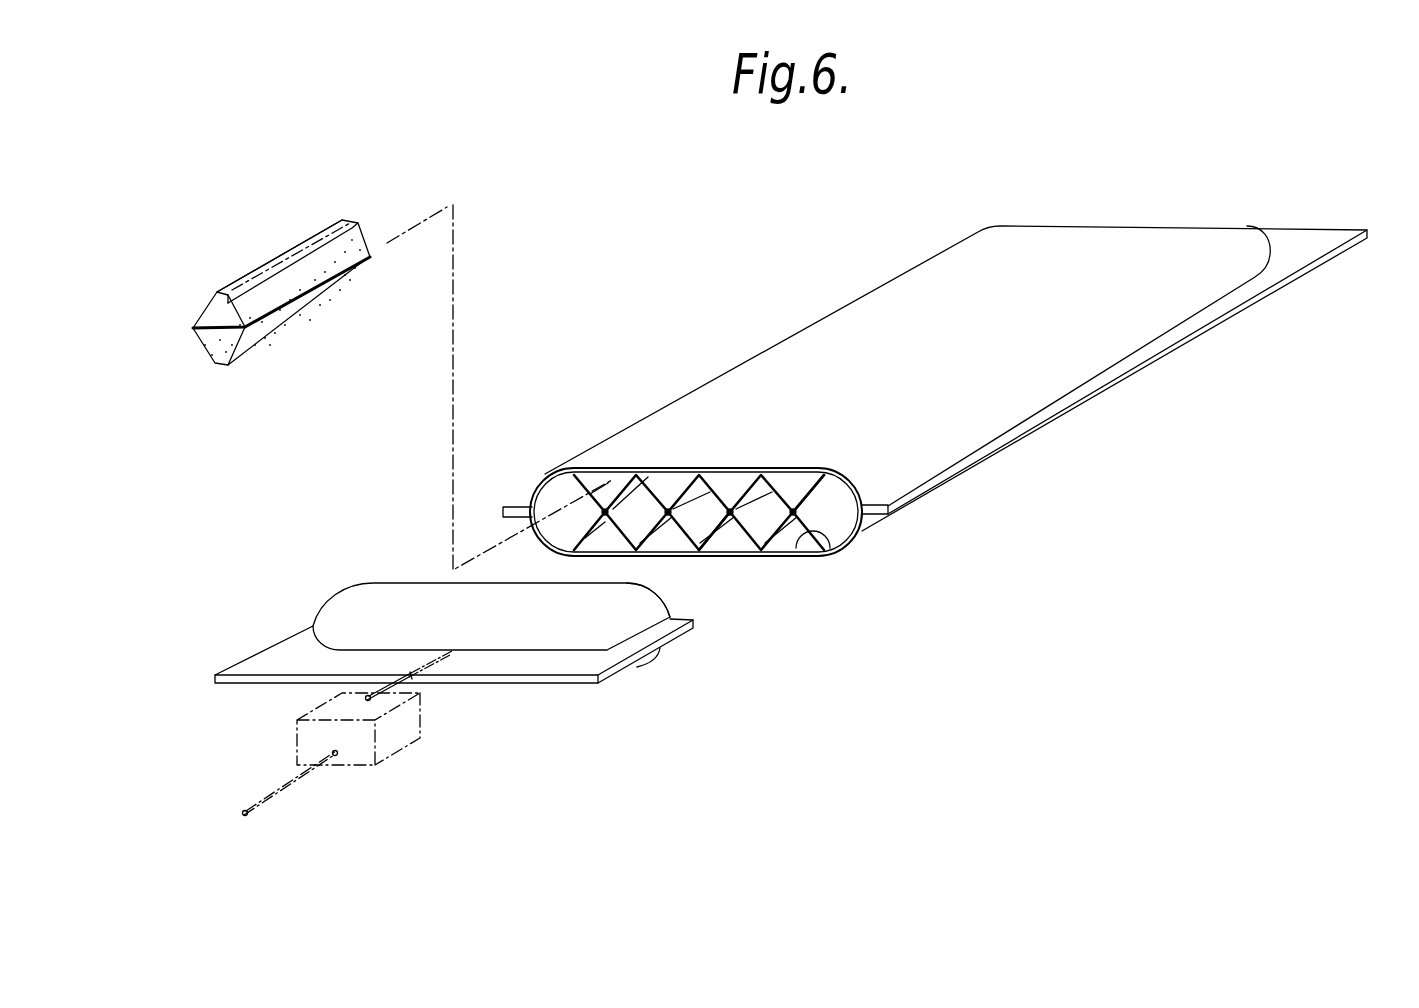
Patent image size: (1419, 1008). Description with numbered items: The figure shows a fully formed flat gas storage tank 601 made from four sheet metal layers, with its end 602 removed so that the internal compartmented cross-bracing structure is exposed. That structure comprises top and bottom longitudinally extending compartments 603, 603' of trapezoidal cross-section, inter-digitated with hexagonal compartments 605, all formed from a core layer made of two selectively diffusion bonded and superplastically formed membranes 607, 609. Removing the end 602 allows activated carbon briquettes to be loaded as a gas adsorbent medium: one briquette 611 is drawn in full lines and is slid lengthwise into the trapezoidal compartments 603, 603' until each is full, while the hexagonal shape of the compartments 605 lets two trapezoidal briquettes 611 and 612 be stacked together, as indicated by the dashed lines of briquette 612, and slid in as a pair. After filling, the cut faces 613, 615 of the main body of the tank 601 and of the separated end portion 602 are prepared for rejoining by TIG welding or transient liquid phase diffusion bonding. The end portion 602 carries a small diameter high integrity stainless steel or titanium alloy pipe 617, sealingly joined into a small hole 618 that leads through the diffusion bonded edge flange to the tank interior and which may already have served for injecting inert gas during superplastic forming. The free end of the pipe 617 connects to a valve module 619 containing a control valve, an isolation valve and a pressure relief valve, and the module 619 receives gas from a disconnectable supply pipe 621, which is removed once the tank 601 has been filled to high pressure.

The flat gas storage tank 601 is at (872, 260).
The end of the tank 602 is at (607, 692).
The top longitudinally extending compartment 603 is at (699, 456).
The bottom longitudinally extending compartment 603' is at (742, 568).
The hexagonal compartments 605 is at (640, 480).
The membrane 607 is at (830, 547).
The membrane 609 is at (815, 492).
The activated carbon briquette 611 is at (282, 327).
The briquette 612 is at (272, 272).
The cut face of the main body 613 is at (520, 510).
The cut face of the end portion 615 is at (682, 618).
The pipe 617 is at (387, 697).
The hole 618 is at (414, 667).
The valve module 619 is at (385, 753).
The supply pipe 621 is at (262, 805).